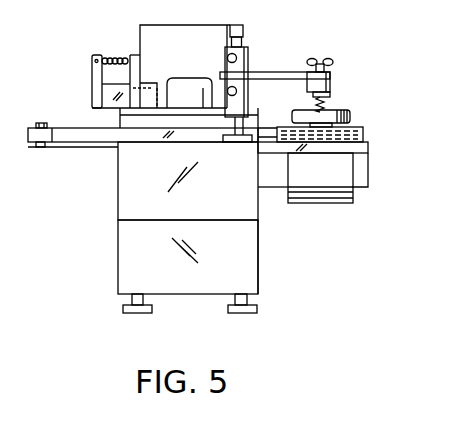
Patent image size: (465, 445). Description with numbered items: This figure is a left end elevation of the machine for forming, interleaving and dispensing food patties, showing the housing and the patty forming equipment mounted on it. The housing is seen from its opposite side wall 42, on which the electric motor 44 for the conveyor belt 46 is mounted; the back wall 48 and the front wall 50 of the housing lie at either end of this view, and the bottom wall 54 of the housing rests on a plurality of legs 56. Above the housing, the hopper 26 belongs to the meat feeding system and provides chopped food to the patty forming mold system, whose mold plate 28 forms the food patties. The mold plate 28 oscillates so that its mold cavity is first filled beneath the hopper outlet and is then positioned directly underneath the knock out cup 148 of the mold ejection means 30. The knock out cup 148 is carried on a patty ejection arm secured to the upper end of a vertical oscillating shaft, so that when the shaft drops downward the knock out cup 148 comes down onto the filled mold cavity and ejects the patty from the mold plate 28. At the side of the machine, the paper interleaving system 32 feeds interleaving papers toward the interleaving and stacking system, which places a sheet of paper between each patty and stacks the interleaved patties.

The hopper 26 is at (142, 39).
The mold plate 28 is at (85, 135).
The mold ejection means 30 is at (340, 72).
The knock out cup 148 is at (346, 115).
The paper interleaving system 32 is at (377, 128).
The conveyor belt 46 is at (323, 203).
The opposite side wall 42 is at (187, 218).
The electric motor 44 is at (128, 173).
The back wall 48 is at (120, 253).
The front wall 50 is at (260, 252).
The bottom wall 54 is at (188, 297).
The legs 56 is at (130, 300).